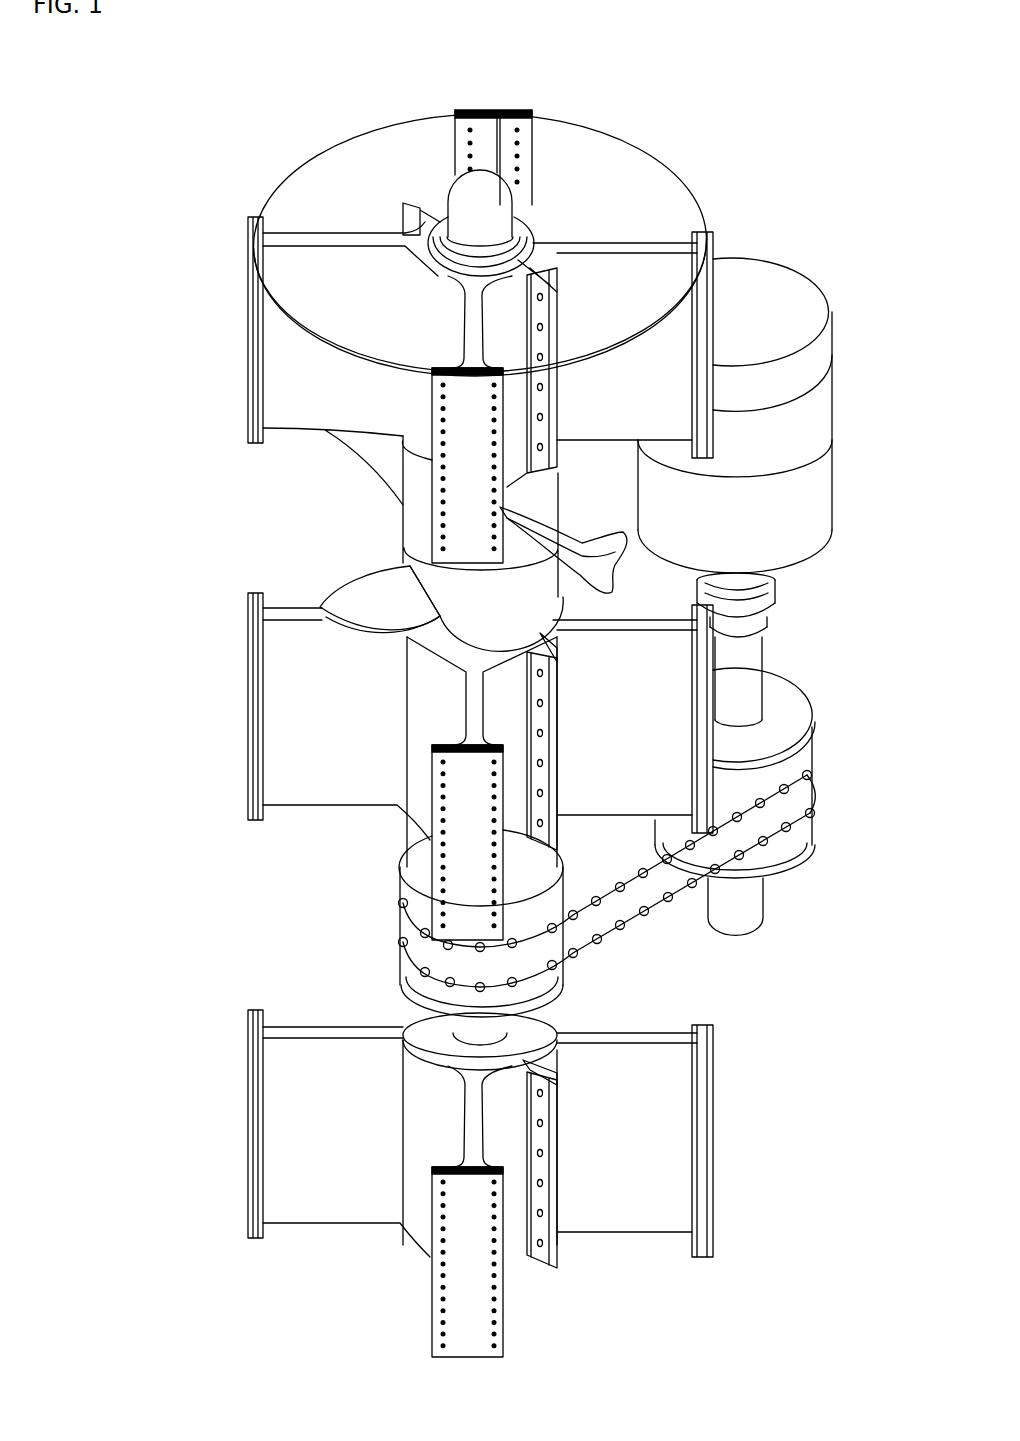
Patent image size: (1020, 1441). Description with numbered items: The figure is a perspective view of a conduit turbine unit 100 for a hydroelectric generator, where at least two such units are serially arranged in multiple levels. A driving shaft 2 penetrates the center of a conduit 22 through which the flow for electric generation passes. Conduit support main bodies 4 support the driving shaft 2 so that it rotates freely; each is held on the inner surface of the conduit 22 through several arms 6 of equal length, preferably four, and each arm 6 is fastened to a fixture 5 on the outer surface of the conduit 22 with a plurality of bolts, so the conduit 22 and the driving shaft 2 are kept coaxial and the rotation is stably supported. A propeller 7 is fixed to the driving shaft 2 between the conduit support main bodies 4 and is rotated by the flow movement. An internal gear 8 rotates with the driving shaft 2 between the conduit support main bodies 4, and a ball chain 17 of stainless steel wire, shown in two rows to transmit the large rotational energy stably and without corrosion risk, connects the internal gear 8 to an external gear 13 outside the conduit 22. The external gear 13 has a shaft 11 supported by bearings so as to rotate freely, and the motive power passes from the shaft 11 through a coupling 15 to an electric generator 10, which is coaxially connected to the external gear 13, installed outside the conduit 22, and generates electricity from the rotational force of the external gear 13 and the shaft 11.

The conduit turbine unit 100 is at (224, 236).
The driving shaft 2 is at (493, 203).
The conduit support main body 4 is at (423, 223).
The fixture 5 is at (250, 270).
The arm 6 is at (340, 252).
The propeller 7 is at (383, 587).
The internal gear 8 is at (397, 970).
The electric generator 10 is at (797, 293).
The shaft 11 is at (750, 662).
The external gear 13 is at (807, 722).
The coupling 15 is at (763, 603).
The ball chain 17 is at (813, 775).
The conduit 22 is at (640, 157).